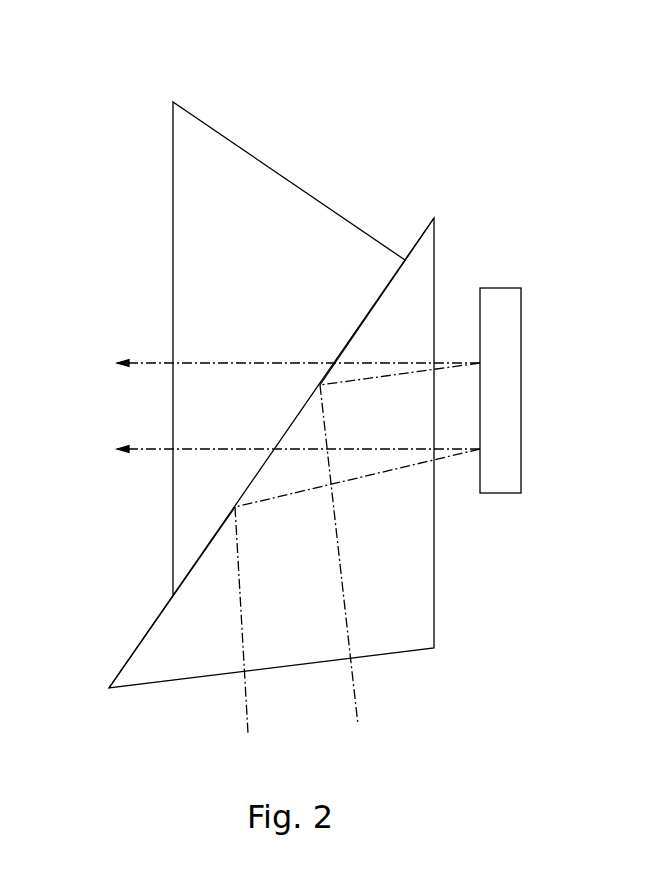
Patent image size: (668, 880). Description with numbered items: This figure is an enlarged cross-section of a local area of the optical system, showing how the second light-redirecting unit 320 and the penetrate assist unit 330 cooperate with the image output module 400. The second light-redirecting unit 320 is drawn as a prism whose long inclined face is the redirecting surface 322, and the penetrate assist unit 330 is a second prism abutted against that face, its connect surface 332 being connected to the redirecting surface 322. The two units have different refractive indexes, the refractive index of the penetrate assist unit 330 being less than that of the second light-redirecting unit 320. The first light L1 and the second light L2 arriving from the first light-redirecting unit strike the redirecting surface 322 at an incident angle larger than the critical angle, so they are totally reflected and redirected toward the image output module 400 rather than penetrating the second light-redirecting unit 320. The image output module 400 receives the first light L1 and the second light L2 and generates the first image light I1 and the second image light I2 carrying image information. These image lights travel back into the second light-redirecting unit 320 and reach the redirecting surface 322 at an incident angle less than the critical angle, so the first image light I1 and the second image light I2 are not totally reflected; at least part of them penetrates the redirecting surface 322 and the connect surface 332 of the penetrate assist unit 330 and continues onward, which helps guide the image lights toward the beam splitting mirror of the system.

The penetrate assist unit 330 is at (212, 155).
The connect surface 332 is at (380, 298).
The second light-redirecting unit 320 is at (295, 637).
The redirecting surface 322 is at (128, 658).
The image output module 400 is at (507, 313).
The first image light I1 is at (393, 455).
The second image light I2 is at (408, 373).
The first light L1 is at (243, 712).
The second light L2 is at (353, 688).